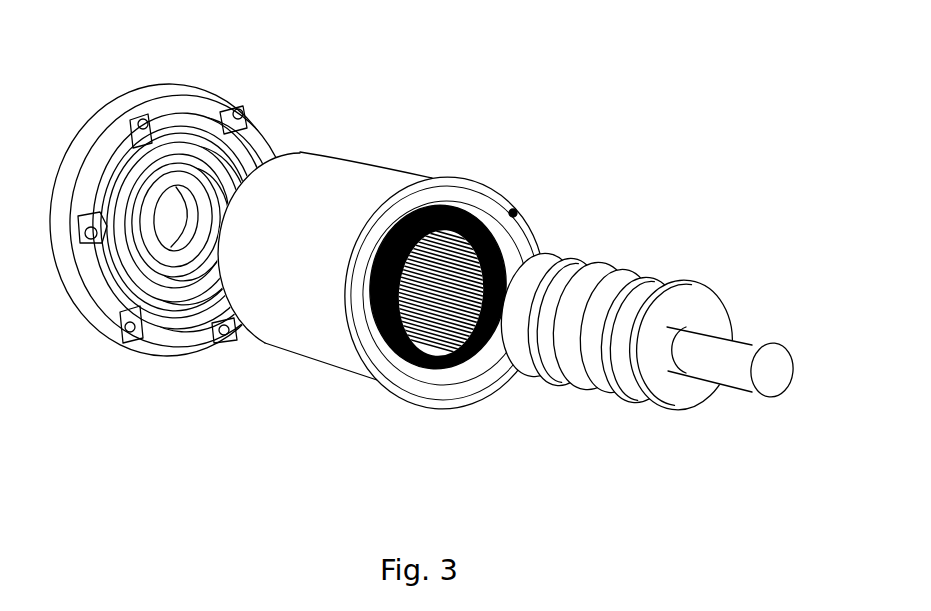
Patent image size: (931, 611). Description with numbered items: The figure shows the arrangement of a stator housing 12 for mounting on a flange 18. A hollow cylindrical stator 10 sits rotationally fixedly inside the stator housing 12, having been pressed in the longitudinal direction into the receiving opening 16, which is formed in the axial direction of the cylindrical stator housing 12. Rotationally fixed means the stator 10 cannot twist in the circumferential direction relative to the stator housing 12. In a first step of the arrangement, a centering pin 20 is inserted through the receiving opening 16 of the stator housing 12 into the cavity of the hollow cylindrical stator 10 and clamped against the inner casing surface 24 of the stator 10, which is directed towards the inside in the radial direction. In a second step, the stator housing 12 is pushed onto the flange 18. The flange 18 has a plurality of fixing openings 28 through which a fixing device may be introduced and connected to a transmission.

The hollow cylindrical stator 10 is at (437, 203).
The stator housing 12 is at (348, 163).
The receiving opening 16 is at (520, 210).
The flange 18 is at (187, 103).
The centering pin 20 is at (667, 273).
The inner casing surface of the stator 24 is at (393, 357).
The fixing openings 28 is at (247, 110).